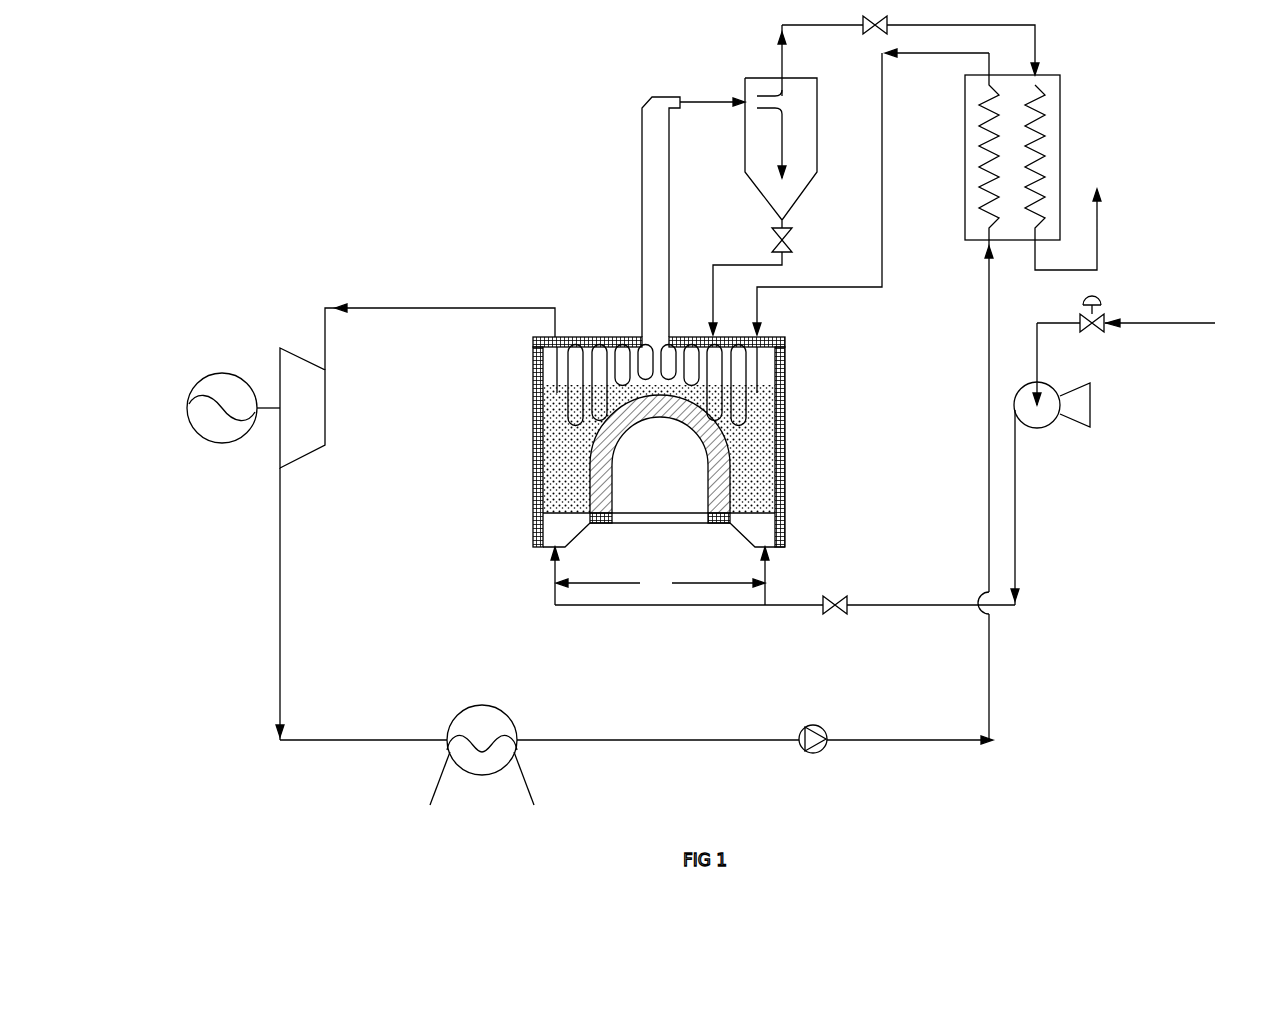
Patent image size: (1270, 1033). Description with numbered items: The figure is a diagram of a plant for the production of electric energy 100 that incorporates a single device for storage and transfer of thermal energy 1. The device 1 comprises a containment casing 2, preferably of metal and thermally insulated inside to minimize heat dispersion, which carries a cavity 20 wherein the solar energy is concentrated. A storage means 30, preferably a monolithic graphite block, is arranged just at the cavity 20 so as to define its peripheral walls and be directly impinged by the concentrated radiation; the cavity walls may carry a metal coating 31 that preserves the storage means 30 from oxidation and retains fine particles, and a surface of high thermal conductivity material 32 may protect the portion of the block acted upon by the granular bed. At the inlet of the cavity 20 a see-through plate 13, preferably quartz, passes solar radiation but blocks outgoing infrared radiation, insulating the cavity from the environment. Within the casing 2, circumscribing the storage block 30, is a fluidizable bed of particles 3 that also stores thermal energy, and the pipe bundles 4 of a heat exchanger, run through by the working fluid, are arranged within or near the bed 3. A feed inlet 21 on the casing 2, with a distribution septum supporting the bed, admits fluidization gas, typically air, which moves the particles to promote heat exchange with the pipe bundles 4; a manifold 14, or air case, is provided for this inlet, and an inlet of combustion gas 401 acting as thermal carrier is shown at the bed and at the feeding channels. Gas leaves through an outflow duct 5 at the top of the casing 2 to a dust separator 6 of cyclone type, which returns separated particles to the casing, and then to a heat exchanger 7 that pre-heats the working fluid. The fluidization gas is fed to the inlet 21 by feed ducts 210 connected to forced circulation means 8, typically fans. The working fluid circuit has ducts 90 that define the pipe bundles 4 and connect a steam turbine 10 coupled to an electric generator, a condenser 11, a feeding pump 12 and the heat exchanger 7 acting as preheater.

The plant for the production of electric energy 100 is at (1227, 145).
The device for storage and transfer of thermal energy 1 is at (729, 381).
The containment casing 2 is at (790, 447).
The fluidizable bed of particles 3 is at (543, 398).
The pipe bundles 4 is at (757, 367).
The outflow duct 5 is at (640, 180).
The dust separator 6 is at (797, 105).
The heat exchanger 7 is at (1053, 103).
The forced circulation means 8 is at (1077, 405).
The steam turbine 10 is at (322, 417).
The condenser 11 is at (482, 763).
The feeding pump 12 is at (822, 750).
The plate 13 is at (667, 517).
The manifold 14 is at (772, 530).
The cavity 20 is at (644, 460).
The feed inlet 21 is at (572, 513).
The storage means 30 is at (608, 455).
The metal coating 31 is at (613, 470).
The surface of high thermal conductivity material 32 is at (612, 405).
The ducts 90 is at (995, 707).
The feed ducts 210 is at (848, 608).
The inlet of combustion gas 401 is at (615, 582).